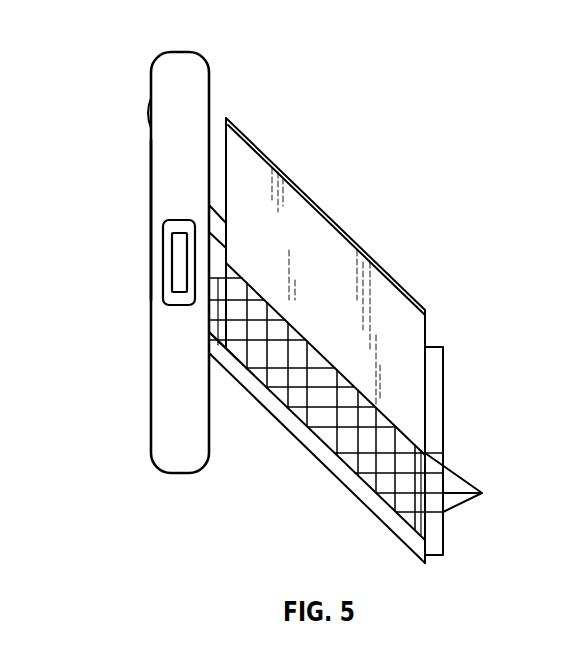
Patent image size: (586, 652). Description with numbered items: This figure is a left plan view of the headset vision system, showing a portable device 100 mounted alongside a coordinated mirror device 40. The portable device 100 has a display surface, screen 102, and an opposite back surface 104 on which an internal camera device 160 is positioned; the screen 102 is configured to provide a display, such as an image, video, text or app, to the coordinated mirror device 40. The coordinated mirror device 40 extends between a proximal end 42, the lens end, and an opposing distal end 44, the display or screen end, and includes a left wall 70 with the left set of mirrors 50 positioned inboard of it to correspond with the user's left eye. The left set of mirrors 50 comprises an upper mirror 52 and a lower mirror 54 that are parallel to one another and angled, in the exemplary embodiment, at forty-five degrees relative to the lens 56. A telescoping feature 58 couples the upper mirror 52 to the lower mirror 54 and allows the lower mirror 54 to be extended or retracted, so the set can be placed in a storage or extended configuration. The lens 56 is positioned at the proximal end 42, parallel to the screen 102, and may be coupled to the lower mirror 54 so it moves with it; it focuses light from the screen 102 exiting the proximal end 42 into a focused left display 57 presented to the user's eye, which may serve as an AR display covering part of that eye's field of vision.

The portable device 100 is at (180, 247).
The screen 102 is at (222, 80).
The back surface 104 is at (138, 149).
The camera device 160 is at (143, 111).
The coordinated mirror device 40 is at (315, 343).
The proximal end 42 is at (453, 337).
The distal end 44 is at (219, 380).
The left set of mirrors 50 is at (426, 270).
The upper mirror 52 is at (218, 233).
The lower mirror 54 is at (325, 453).
The lens 56 is at (433, 393).
The left display 57 is at (490, 502).
The telescoping feature 58 is at (226, 308).
The left wall 70 is at (333, 241).